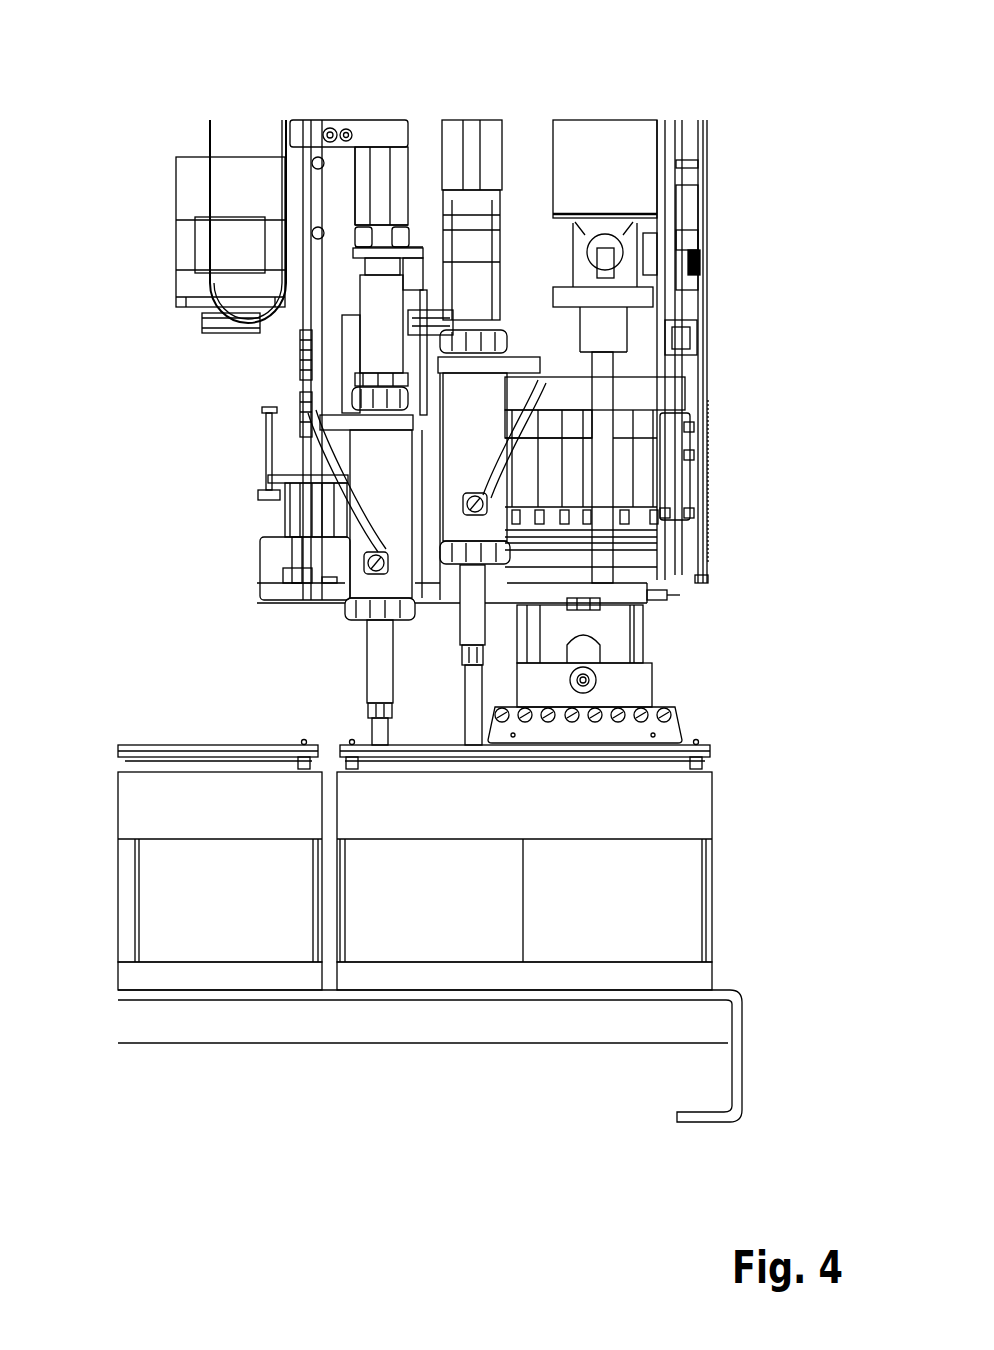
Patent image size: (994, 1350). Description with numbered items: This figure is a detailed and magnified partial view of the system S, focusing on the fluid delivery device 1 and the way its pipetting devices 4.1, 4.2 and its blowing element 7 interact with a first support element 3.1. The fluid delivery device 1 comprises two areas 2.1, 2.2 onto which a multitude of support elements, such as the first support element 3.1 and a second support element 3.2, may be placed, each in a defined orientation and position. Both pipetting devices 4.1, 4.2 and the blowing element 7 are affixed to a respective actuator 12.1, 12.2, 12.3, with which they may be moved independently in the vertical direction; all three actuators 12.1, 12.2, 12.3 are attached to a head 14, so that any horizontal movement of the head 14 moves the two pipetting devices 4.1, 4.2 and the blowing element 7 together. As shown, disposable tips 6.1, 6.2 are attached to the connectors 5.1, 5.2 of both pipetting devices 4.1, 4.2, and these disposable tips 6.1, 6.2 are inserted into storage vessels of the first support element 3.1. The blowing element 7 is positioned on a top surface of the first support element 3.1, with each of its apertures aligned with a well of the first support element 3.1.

The system S is at (160, 85).
The fluid delivery device 1 is at (745, 480).
The first area 2.1 is at (522, 998).
The second area 2.2 is at (215, 998).
The first support element 3.1 is at (707, 763).
The second support element 3.2 is at (132, 765).
The first pipetting device 4.1 is at (375, 478).
The second pipetting device 4.2 is at (452, 494).
The connector 5.1 is at (392, 705).
The connector 5.2 is at (455, 648).
The disposable tip 6.1 is at (377, 735).
The disposable tip 6.2 is at (470, 690).
The blowing element 7 is at (630, 687).
The actuator 12.1 is at (375, 353).
The actuator 12.2 is at (462, 272).
The actuator 12.3 is at (640, 304).
The head 14 is at (698, 236).